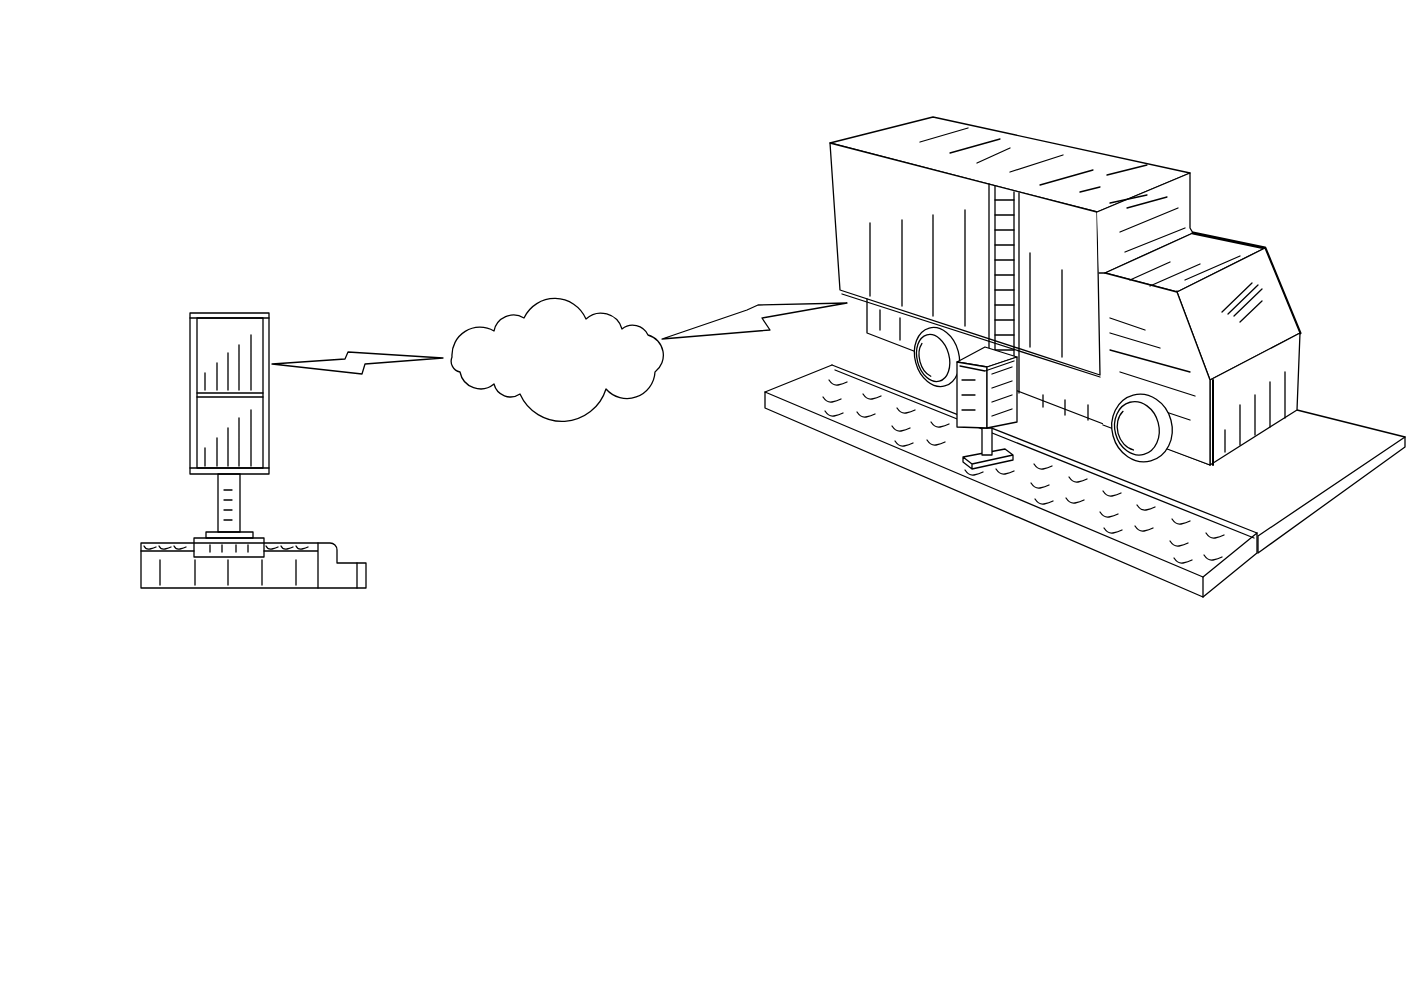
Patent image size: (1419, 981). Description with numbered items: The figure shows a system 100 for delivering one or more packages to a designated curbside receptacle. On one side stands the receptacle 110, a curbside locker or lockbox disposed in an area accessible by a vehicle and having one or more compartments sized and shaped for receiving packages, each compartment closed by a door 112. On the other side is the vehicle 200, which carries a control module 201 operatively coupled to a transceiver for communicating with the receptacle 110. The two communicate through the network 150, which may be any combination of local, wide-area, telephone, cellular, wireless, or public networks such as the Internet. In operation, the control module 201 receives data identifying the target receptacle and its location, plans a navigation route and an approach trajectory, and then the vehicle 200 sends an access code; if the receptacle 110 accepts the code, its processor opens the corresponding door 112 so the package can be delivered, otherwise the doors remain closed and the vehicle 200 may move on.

The system 100 is at (182, 92).
The receptacle 110 is at (228, 312).
The door 112 is at (266, 345).
The network 150 is at (555, 312).
The vehicle 200 is at (1057, 150).
The control module 201 is at (1247, 352).